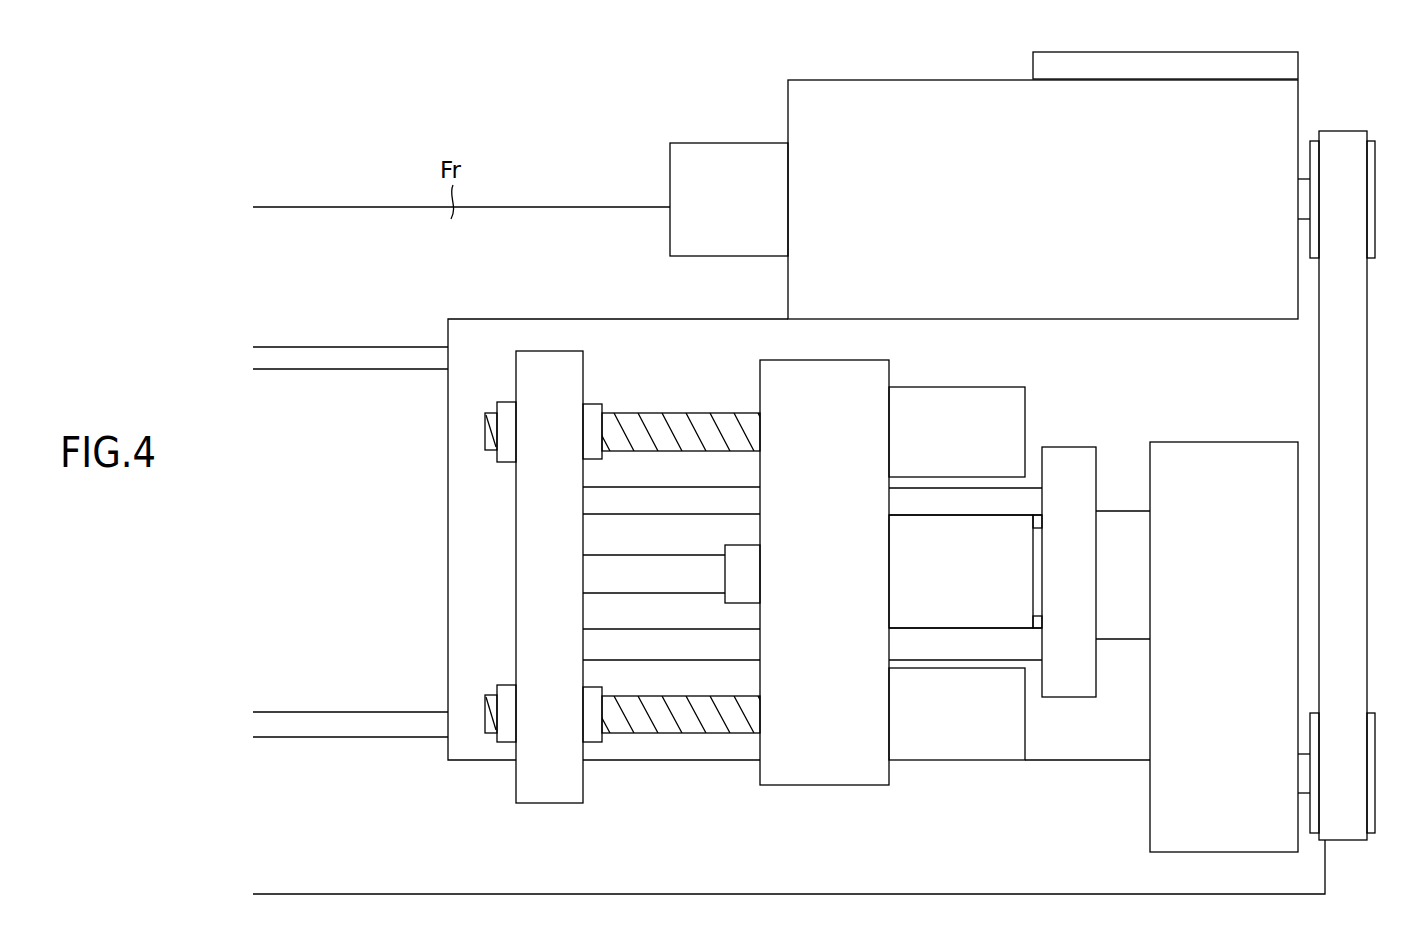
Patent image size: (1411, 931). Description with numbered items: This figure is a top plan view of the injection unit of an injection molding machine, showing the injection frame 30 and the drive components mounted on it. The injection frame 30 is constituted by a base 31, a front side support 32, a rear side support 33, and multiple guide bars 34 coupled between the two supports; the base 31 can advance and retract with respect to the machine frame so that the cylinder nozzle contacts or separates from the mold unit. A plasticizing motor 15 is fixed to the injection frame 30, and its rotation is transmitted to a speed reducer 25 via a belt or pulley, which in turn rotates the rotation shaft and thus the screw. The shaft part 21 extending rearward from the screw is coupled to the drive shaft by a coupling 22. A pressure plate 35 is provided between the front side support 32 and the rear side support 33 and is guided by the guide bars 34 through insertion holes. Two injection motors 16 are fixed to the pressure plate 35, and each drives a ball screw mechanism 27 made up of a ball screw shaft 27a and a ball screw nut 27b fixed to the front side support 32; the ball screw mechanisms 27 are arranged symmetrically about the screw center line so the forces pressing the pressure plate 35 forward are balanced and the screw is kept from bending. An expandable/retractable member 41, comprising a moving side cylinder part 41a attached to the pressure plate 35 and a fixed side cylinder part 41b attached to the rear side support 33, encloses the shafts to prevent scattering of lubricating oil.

The plasticizing motor 15 is at (914, 89).
The injection motor 16 is at (912, 401).
The shaft part 21 is at (651, 568).
The coupling 22 is at (733, 553).
The speed reducer 25 is at (1223, 456).
The ball screw mechanism 27 is at (680, 582).
The ball screw shaft 27a is at (610, 359).
The ball screw nut 27b is at (592, 416).
The injection frame 30 is at (1153, 48).
The base 31 is at (598, 335).
The front side support 32 is at (552, 366).
The rear side support 33 is at (1069, 462).
The guide bars 34 is at (603, 506).
The pressure plate 35 is at (822, 371).
The expandable/retractable member 41 is at (973, 477).
The moving side cylinder part 41a is at (980, 537).
The fixed side cylinder part 41b is at (1038, 535).